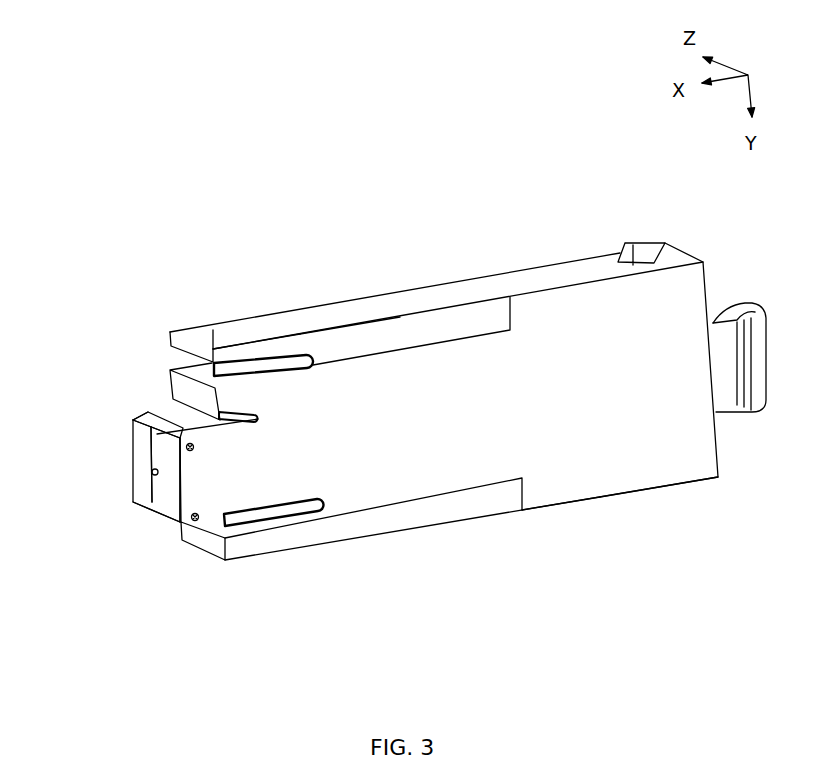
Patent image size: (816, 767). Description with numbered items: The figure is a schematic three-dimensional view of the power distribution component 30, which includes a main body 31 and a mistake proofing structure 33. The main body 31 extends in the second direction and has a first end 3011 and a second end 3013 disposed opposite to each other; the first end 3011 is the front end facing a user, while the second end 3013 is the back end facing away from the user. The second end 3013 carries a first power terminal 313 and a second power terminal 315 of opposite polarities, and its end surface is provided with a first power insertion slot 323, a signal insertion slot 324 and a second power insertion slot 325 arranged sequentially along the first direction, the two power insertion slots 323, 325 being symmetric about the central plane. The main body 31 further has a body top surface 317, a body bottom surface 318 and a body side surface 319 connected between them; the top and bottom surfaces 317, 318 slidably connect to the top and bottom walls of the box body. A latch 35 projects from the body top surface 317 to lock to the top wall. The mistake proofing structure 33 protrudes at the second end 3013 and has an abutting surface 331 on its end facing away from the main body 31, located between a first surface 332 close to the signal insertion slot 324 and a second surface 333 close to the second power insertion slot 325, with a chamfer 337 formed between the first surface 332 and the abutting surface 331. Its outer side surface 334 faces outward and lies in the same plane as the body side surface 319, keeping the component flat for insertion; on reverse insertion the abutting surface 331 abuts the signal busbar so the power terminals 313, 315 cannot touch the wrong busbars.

The power distribution component 30 is at (423, 82).
The main body 31 is at (540, 617).
The first end 3011 is at (677, 363).
The second end 3013 is at (292, 470).
The first power terminal 313 is at (200, 357).
The second power terminal 315 is at (246, 532).
The body top surface 317 is at (465, 290).
The body bottom surface 318 is at (678, 483).
The body side surface 319 is at (695, 417).
The first power insertion slot 323 is at (288, 359).
The signal insertion slot 324 is at (243, 408).
The second power insertion slot 325 is at (272, 530).
The mistake proofing structure 33 is at (62, 497).
The abutting surface 331 is at (167, 492).
The first surface 332 is at (177, 427).
The second surface 333 is at (187, 537).
The outer side surface 334 is at (223, 495).
The chamfer 337 is at (142, 410).
The latch 35 is at (630, 243).